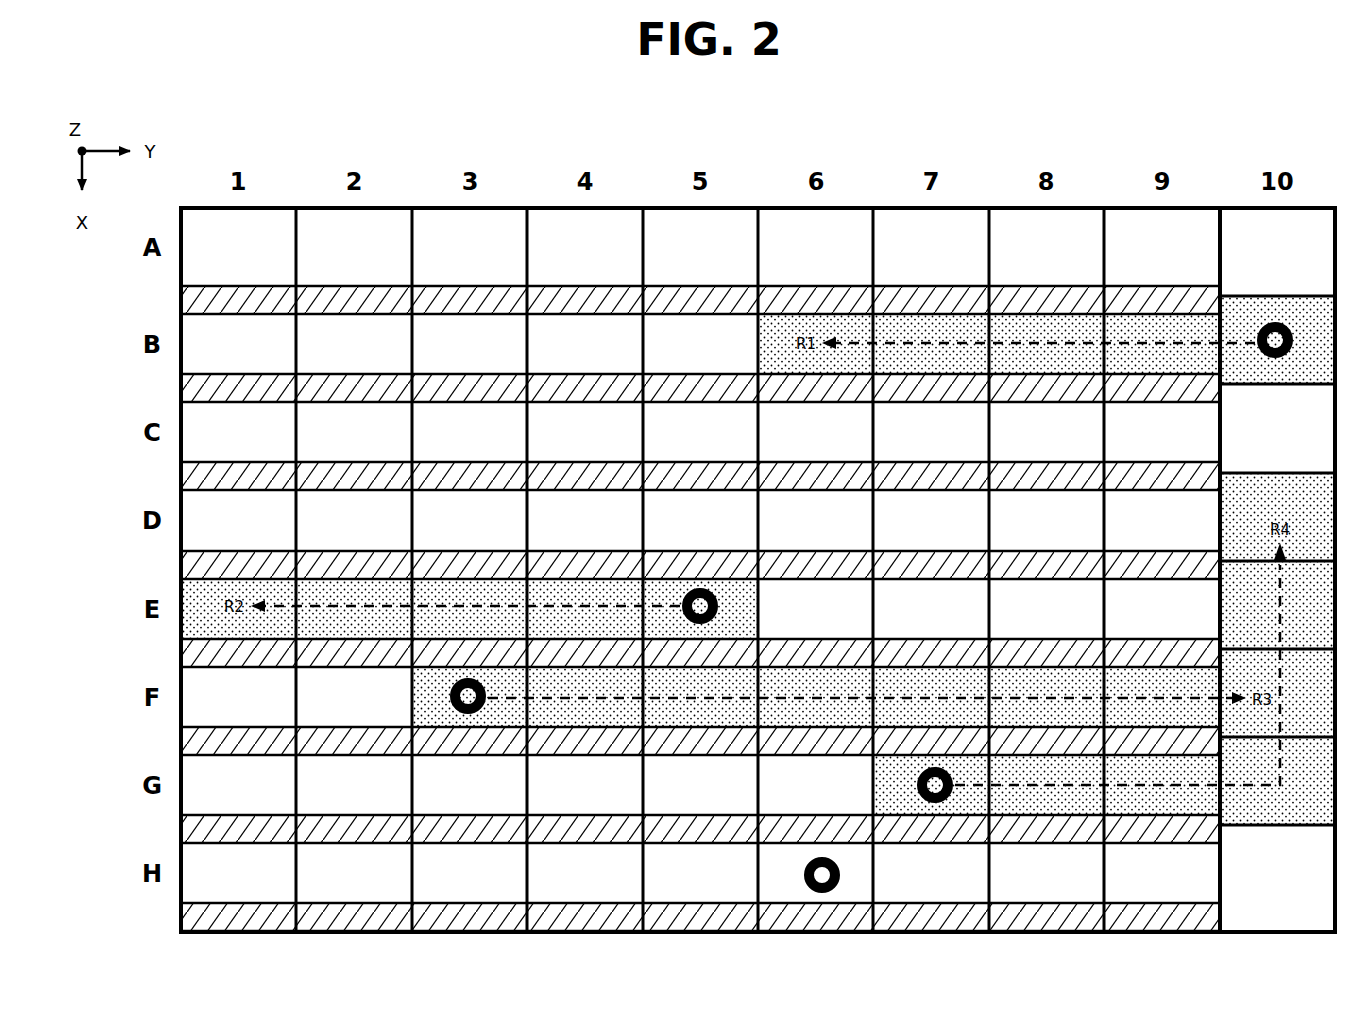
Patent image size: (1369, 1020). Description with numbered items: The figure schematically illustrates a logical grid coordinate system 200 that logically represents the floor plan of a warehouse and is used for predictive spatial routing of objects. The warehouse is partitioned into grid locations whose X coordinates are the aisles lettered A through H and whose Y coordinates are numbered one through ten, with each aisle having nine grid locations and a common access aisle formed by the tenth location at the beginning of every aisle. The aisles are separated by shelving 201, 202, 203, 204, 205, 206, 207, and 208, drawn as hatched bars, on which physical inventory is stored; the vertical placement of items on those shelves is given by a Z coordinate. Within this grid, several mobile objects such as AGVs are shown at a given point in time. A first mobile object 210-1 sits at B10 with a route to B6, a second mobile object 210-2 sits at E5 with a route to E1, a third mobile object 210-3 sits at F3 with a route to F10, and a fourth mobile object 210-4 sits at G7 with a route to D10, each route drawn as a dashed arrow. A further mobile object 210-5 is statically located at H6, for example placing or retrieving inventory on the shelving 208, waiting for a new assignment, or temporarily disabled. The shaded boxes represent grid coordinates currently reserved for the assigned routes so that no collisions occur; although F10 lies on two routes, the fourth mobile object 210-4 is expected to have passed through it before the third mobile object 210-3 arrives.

The logical grid coordinate system 200 is at (718, 96).
The shelving 201 is at (181, 306).
The shelving 202 is at (181, 394).
The shelving 203 is at (181, 482).
The shelving 204 is at (181, 571).
The shelving 205 is at (181, 659).
The shelving 206 is at (181, 747).
The shelving 207 is at (181, 835).
The shelving 208 is at (181, 923).
The first mobile object 210-1 is at (1275, 322).
The second mobile object 210-2 is at (718, 608).
The third mobile object 210-3 is at (450, 697).
The fourth mobile object 210-4 is at (917, 786).
The mobile object 210-5 is at (804, 875).